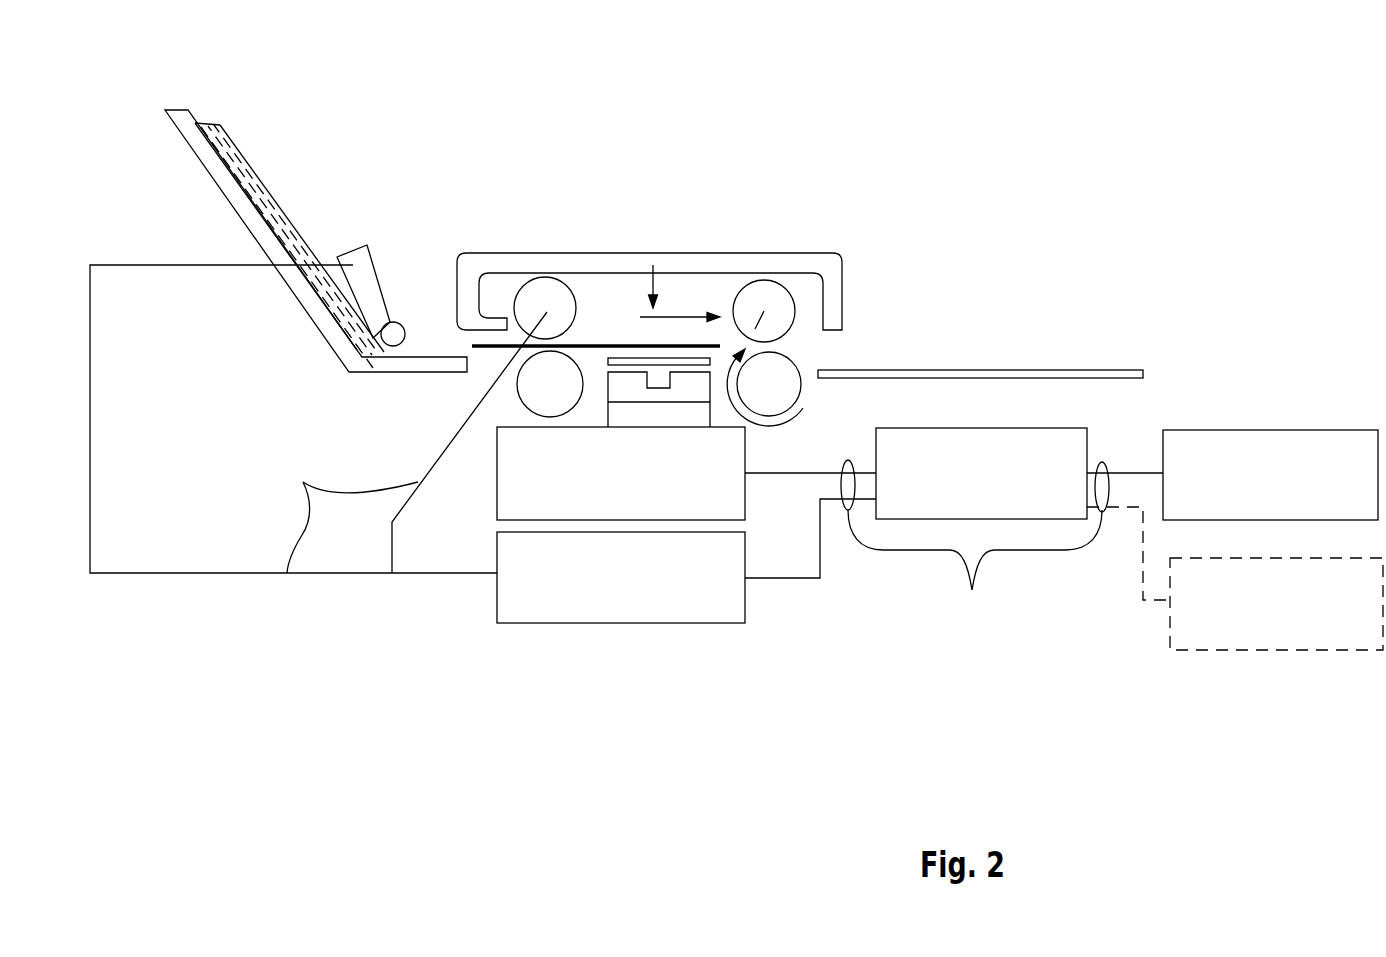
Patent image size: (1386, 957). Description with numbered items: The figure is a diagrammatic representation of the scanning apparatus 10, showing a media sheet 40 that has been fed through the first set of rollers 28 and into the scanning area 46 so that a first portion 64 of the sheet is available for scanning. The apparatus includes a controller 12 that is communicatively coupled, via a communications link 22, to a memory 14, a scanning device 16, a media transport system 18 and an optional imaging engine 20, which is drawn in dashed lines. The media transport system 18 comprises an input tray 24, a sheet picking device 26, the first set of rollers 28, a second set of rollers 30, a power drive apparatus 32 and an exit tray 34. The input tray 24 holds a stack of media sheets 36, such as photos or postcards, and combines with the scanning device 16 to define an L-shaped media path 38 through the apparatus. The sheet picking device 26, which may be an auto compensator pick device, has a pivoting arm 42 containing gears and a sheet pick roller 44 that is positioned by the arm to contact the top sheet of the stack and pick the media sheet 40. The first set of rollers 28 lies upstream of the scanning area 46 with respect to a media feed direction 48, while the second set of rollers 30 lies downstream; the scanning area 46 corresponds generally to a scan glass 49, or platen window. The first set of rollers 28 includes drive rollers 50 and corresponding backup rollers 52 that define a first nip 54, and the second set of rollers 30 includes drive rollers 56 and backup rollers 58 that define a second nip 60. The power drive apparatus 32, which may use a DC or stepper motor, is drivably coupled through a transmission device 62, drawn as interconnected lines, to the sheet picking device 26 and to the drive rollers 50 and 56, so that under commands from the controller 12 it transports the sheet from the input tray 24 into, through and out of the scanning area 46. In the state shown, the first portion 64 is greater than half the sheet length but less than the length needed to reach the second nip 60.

The scanning apparatus 10 is at (1186, 218).
The controller 12 is at (981, 473).
The memory 14 is at (1270, 475).
The scanning device 16 is at (621, 446).
The media transport system 18 is at (630, 686).
The imaging engine 20 is at (1276, 604).
The communications link 22 is at (975, 568).
The input tray 24 is at (178, 120).
The sheet picking device 26 is at (390, 250).
The first set of rollers 28 is at (544, 270).
The second set of rollers 30 is at (740, 292).
The power drive apparatus 32 is at (621, 577).
The exit tray 34 is at (1138, 370).
The stack of media sheets 36 is at (210, 118).
The media path 38 is at (450, 295).
The media sheet 40 is at (724, 346).
The pivoting arm 42 is at (397, 322).
The sheet pick roller 44 is at (462, 343).
The scanning area 46 is at (653, 265).
The media feed direction 48 is at (683, 316).
The scan glass 49 is at (692, 364).
The drive rollers 50 is at (547, 312).
The backup rollers 52 is at (550, 384).
The first nip 54 is at (497, 362).
The drive rollers 56 is at (765, 270).
The backup rollers 58 is at (769, 384).
The second nip 60 is at (785, 387).
The transmission device 62 is at (618, 343).
The first portion 64 is at (640, 355).